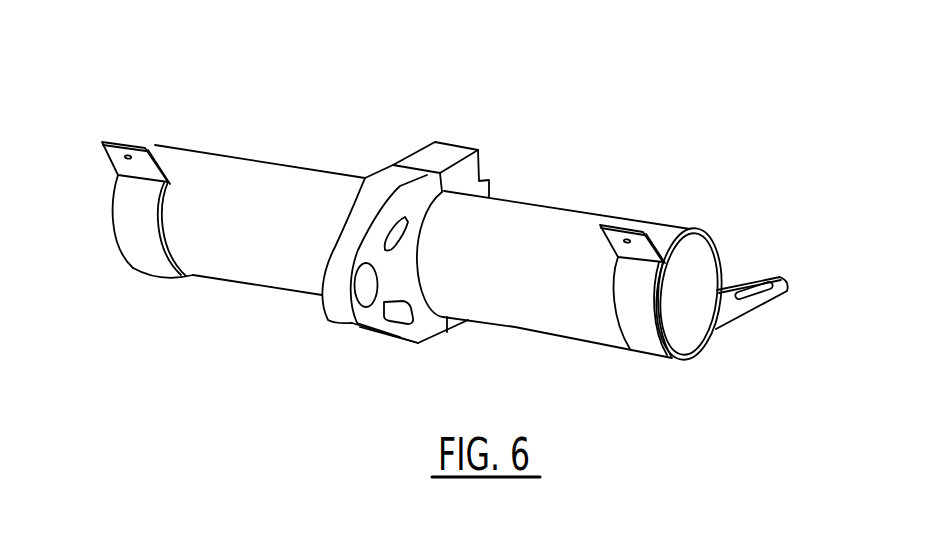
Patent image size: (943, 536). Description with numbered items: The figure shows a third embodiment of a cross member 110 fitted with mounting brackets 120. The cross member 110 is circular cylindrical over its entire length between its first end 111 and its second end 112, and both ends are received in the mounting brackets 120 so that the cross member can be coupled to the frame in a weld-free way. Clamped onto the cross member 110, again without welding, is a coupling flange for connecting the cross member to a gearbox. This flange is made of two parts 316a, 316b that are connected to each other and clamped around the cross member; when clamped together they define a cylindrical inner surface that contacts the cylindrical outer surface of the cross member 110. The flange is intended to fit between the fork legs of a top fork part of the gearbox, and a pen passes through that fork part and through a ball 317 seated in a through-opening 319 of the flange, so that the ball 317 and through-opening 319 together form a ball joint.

The cross member 110 is at (594, 103).
The first end 111 is at (684, 185).
The second end 112 is at (196, 108).
The mounting brackets 120 is at (147, 266).
The coupling flange part 316a is at (388, 181).
The coupling flange part 316b is at (443, 152).
The ball 317 is at (355, 323).
The through-opening 319 is at (363, 285).